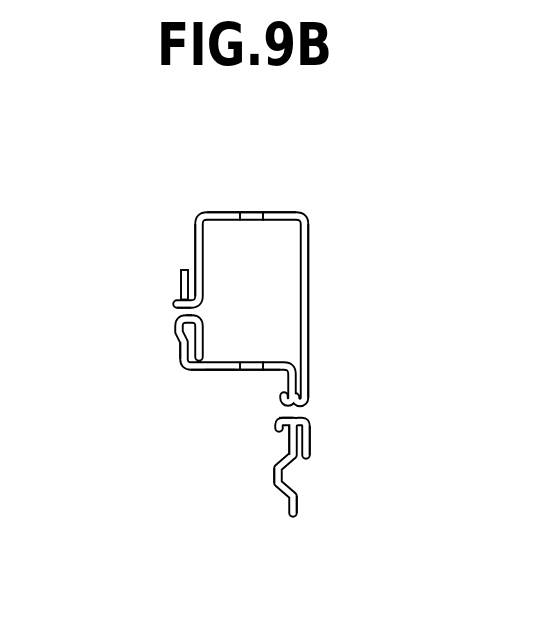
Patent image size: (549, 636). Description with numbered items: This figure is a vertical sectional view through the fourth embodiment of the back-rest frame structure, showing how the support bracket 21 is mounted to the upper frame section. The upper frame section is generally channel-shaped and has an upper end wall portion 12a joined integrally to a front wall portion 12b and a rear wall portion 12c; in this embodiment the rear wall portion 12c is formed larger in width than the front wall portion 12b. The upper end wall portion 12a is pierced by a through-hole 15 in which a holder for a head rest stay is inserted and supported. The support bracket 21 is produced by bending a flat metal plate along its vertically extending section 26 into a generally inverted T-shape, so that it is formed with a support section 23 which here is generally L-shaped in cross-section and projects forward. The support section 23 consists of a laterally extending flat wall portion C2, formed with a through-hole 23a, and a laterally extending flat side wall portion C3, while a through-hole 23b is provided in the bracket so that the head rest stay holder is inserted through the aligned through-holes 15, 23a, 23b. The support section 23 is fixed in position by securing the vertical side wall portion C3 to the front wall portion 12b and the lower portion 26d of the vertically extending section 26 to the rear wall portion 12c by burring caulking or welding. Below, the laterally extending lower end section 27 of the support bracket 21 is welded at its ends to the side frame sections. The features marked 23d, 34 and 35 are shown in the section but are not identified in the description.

The upper end wall portion 12a is at (297, 172).
The front wall portion 12b is at (161, 215).
The rear wall portion 12c is at (367, 307).
The through-hole 15 is at (251, 169).
The support bracket 21 is at (356, 520).
The support section 23 is at (190, 417).
The through-hole 23a is at (218, 426).
The through-hole 23b is at (128, 260).
The flange of bracket 23d is at (374, 460).
The vertically extending section 26 is at (121, 377).
The lower portion of the vertically extending section 26d is at (245, 521).
The lower end section 27 is at (265, 525).
The lower lip of side wall 34 is at (129, 292).
The hook portion 35 is at (232, 500).
The flat wall portion C2 is at (171, 446).
The side wall portion C3 is at (127, 342).